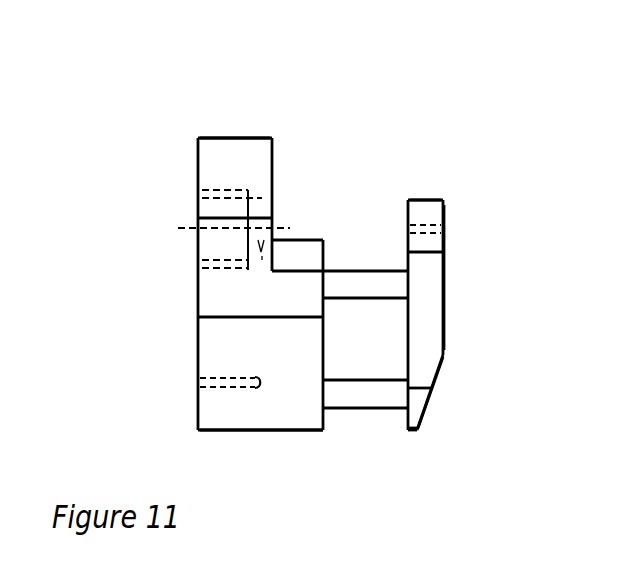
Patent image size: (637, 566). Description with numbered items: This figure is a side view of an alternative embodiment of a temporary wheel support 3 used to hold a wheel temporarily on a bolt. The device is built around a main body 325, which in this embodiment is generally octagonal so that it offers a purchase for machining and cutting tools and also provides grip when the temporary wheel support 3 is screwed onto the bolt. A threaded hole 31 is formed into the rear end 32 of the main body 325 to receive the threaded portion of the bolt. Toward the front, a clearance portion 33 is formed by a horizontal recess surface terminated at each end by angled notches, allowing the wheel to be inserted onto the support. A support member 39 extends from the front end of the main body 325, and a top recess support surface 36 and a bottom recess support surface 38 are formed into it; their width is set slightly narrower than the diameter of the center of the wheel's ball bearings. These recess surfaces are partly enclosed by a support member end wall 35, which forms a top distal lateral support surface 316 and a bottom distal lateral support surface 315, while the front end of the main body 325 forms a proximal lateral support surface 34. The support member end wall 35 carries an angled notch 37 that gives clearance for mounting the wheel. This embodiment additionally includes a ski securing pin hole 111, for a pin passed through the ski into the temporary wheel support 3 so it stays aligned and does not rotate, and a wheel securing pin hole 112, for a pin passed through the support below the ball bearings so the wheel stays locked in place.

The temporary wheel support 3 is at (228, 418).
The threaded hole 31 is at (208, 247).
The rear end 32 is at (198, 165).
The clearance portion 33 is at (296, 218).
The proximal lateral support surface 34 is at (330, 412).
The support member end wall 35 is at (435, 323).
The top recess support surface 36 is at (365, 283).
The angled notch 37 is at (433, 410).
The bottom recess support surface 38 is at (358, 408).
The support member 39 is at (382, 365).
The ski securing pin hole 111 is at (210, 377).
The wheel securing pin hole 112 is at (443, 232).
The bottom distal lateral support surface 315 is at (410, 420).
The top distal lateral support surface 316 is at (408, 226).
The main body 325 is at (243, 114).